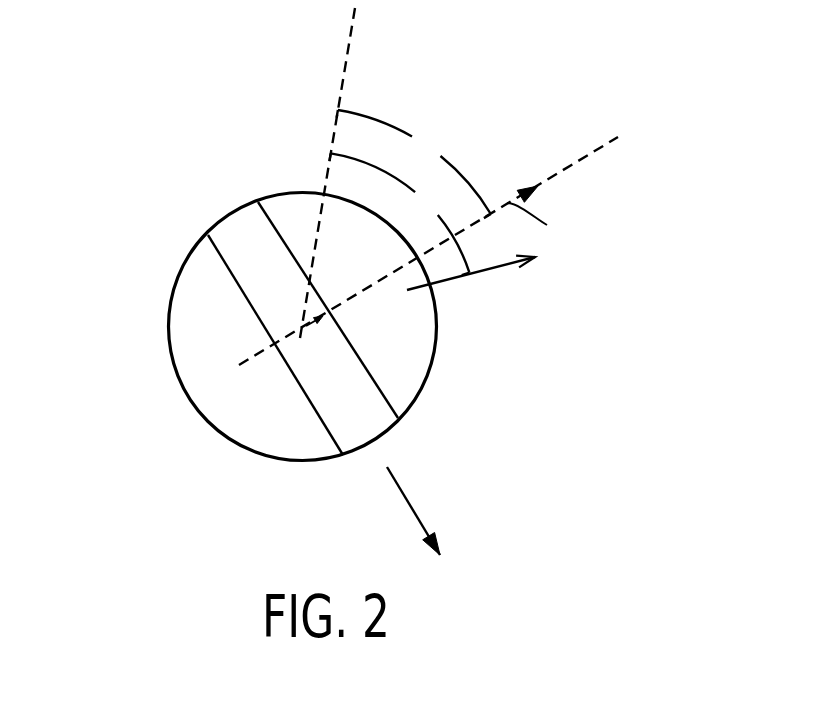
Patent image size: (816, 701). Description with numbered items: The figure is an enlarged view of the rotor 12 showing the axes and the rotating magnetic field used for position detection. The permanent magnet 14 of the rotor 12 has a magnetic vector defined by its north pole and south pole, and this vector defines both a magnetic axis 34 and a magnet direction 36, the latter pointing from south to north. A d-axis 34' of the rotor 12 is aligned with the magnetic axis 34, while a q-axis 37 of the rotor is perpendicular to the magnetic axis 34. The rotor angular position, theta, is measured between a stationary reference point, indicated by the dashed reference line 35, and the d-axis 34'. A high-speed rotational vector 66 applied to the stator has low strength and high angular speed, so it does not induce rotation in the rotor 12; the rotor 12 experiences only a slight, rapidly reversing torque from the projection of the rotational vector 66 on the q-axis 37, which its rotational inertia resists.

The rotor 12 is at (303, 462).
The permanent magnet 14 is at (240, 248).
The magnetic axis 34 is at (428, 241).
The d-axis 34' is at (537, 214).
The reference axis 35 is at (345, 70).
The magnet direction 36 is at (283, 338).
The q-axis 37 is at (402, 485).
The high-speed rotational vector 66 is at (477, 275).